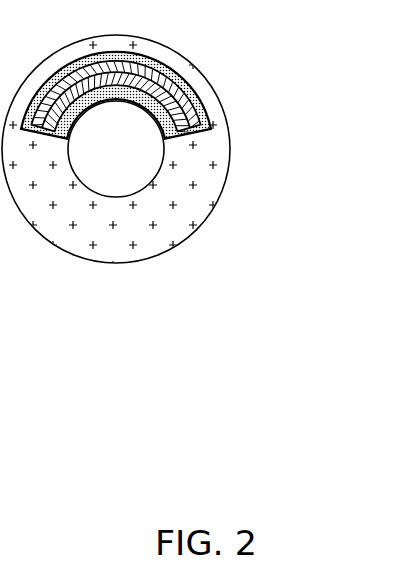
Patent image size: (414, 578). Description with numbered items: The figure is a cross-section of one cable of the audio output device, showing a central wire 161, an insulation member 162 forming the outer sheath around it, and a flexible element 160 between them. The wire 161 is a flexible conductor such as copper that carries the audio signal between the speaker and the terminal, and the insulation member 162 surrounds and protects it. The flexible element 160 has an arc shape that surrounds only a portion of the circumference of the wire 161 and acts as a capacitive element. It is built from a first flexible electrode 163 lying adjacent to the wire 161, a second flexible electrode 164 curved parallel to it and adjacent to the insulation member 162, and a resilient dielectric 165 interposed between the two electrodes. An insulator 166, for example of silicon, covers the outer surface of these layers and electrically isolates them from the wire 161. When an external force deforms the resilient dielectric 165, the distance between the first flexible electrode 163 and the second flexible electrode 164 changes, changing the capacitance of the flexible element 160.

The flexible element 160 is at (210, 105).
The wire 161 is at (138, 160).
The insulation member 162 is at (192, 215).
The first flexible electrode 163 is at (188, 128).
The second flexible electrode 164 is at (205, 107).
The resilient dielectric 165 is at (203, 113).
The insulator 166 is at (193, 90).